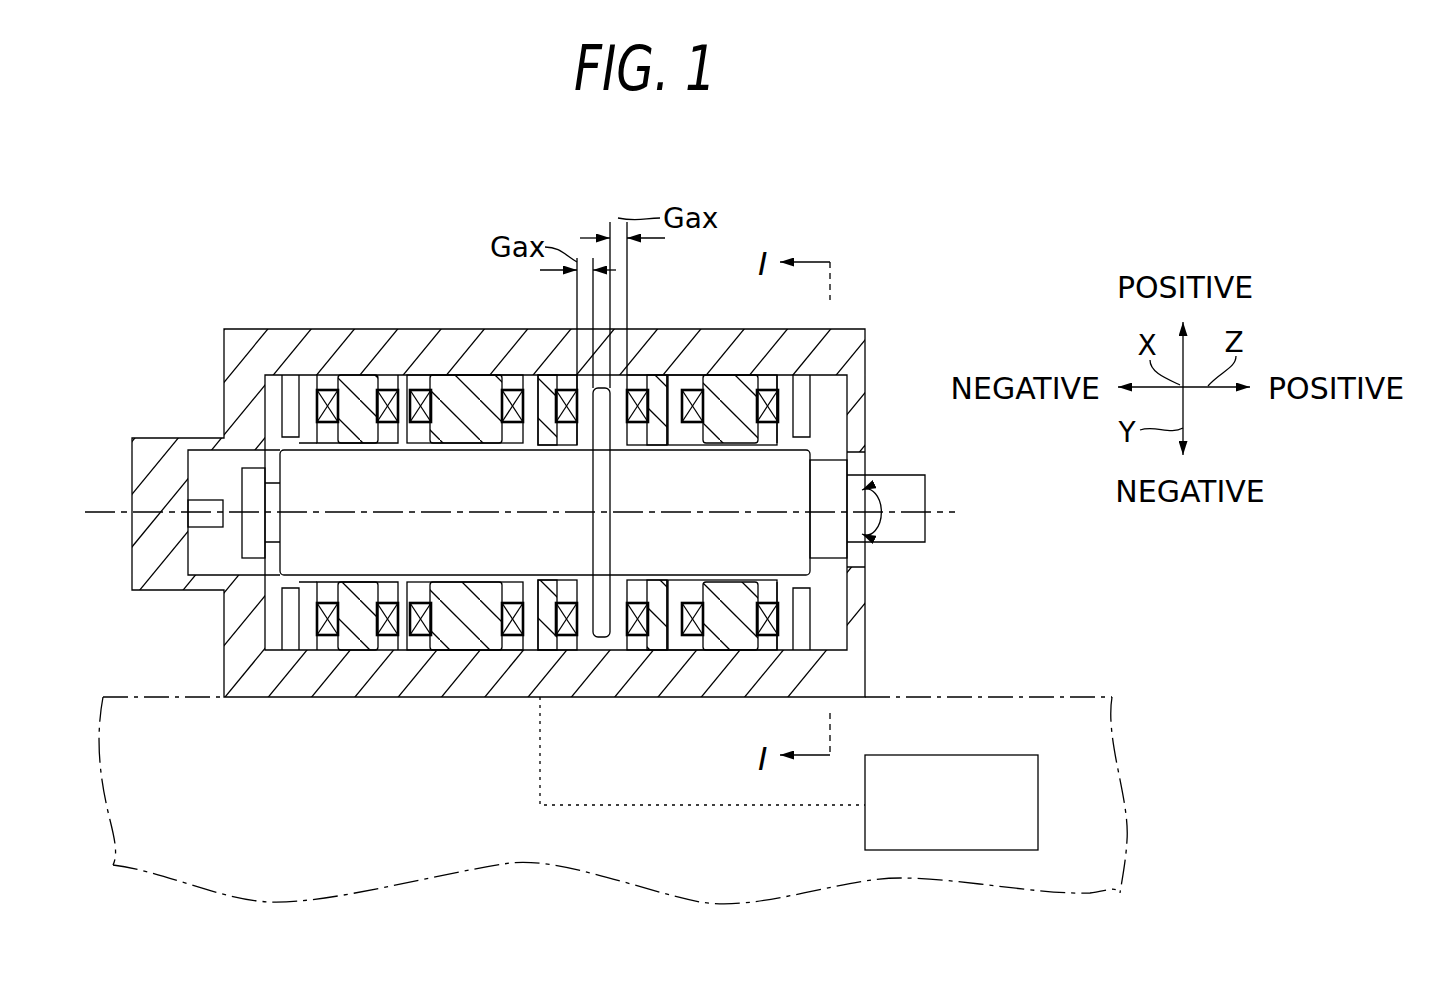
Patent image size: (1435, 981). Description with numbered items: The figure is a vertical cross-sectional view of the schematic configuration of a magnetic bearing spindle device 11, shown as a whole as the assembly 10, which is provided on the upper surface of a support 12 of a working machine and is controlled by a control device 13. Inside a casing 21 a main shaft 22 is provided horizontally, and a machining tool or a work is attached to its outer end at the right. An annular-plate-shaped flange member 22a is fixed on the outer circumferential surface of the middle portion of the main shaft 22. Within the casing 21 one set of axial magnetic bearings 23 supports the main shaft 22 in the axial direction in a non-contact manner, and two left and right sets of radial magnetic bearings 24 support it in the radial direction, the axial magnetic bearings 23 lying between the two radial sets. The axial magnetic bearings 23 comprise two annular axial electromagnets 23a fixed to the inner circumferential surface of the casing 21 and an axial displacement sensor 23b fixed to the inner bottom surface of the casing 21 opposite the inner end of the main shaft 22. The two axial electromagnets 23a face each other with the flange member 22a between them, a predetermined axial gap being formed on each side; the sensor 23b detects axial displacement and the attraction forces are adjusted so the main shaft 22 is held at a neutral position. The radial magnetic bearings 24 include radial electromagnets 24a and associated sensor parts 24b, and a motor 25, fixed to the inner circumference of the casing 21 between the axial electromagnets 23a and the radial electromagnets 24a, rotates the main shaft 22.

The magnetic bearing device 10 is at (284, 286).
The magnetic bearing spindle device 11 is at (390, 324).
The support 12 is at (150, 695).
The control device 13 is at (950, 754).
The casing 21 is at (427, 330).
The main shaft 22 is at (465, 545).
The flange member 22a is at (592, 466).
The axial magnetic bearings 23 is at (567, 655).
The axial electromagnet 23a is at (555, 384).
The axial displacement sensor 23b is at (205, 508).
The radial magnetic bearings 24 is at (358, 655).
The radial electromagnet 24a is at (362, 449).
The radial position sensor 24b is at (300, 449).
The motor 25 is at (479, 637).